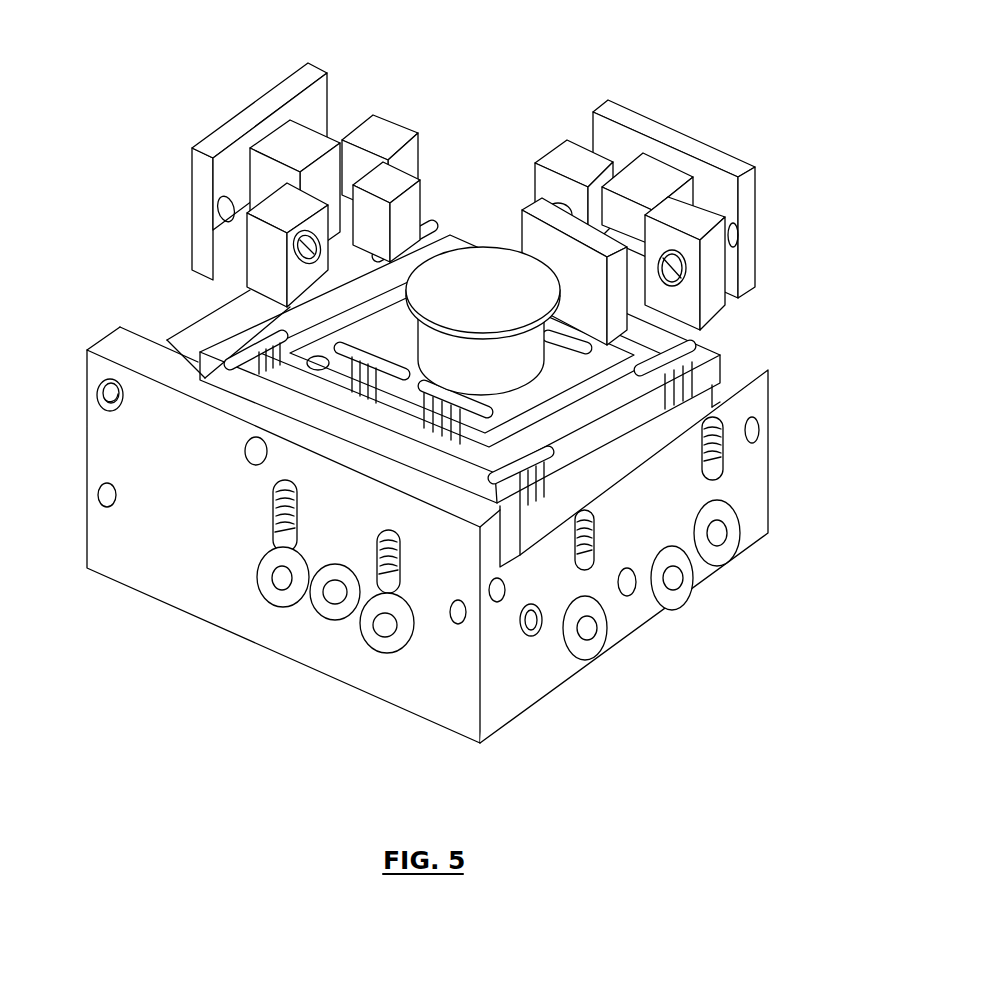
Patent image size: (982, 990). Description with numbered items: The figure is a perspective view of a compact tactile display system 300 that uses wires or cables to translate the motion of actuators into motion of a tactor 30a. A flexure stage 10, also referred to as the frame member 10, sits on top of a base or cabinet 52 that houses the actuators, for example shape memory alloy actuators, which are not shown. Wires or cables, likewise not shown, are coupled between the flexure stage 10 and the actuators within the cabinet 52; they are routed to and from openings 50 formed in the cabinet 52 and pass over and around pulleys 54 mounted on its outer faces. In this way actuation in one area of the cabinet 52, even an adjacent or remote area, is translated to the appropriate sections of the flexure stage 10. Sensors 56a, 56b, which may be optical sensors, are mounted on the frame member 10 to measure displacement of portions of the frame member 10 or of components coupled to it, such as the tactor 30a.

The system 300 is at (118, 192).
The flexure stage 10 is at (708, 368).
The tactor 30a is at (507, 362).
The openings 50 is at (384, 626).
The cabinet 52 is at (133, 562).
The pulleys 54 is at (368, 567).
The sensor 56a is at (300, 80).
The sensor 56b is at (618, 112).